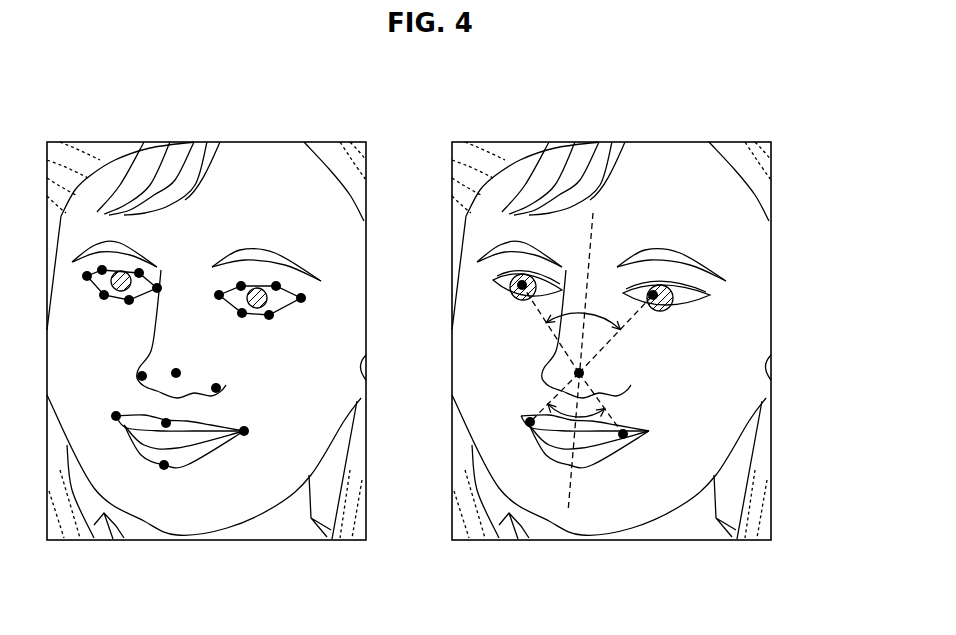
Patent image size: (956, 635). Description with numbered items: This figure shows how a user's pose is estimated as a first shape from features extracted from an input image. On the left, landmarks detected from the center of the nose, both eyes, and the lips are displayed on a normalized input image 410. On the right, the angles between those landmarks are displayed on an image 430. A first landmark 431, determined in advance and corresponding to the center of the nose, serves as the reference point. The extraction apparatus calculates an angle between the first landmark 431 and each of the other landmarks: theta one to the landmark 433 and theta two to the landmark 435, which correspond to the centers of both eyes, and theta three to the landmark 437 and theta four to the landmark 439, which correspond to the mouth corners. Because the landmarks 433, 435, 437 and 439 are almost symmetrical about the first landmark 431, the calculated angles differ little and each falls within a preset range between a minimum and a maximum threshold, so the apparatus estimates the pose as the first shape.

The normalized input image 410 is at (205, 142).
The image 430 is at (608, 142).
The first landmark 431 is at (581, 373).
The landmark 433 is at (520, 284).
The landmark 435 is at (656, 294).
The landmark 437 is at (530, 422).
The landmark 439 is at (623, 434).